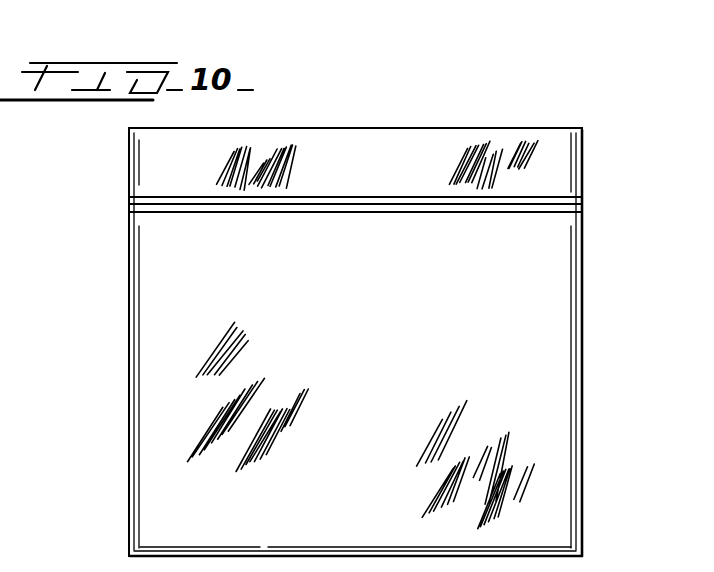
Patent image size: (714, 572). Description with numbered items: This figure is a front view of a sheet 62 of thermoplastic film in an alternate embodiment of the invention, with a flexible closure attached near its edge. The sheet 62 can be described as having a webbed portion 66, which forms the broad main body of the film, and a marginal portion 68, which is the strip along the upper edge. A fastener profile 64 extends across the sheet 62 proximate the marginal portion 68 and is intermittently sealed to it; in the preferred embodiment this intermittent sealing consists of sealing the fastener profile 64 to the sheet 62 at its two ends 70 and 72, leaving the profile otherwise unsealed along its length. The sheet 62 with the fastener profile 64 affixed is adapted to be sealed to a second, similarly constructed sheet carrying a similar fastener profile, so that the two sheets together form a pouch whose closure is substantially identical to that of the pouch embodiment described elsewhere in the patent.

The sheet 62 is at (582, 336).
The fastener profile 64 is at (533, 212).
The webbed portion 66 is at (157, 316).
The marginal portion 68 is at (354, 152).
The end of fastener profile 70 is at (129, 198).
The end of fastener profile 72 is at (580, 197).